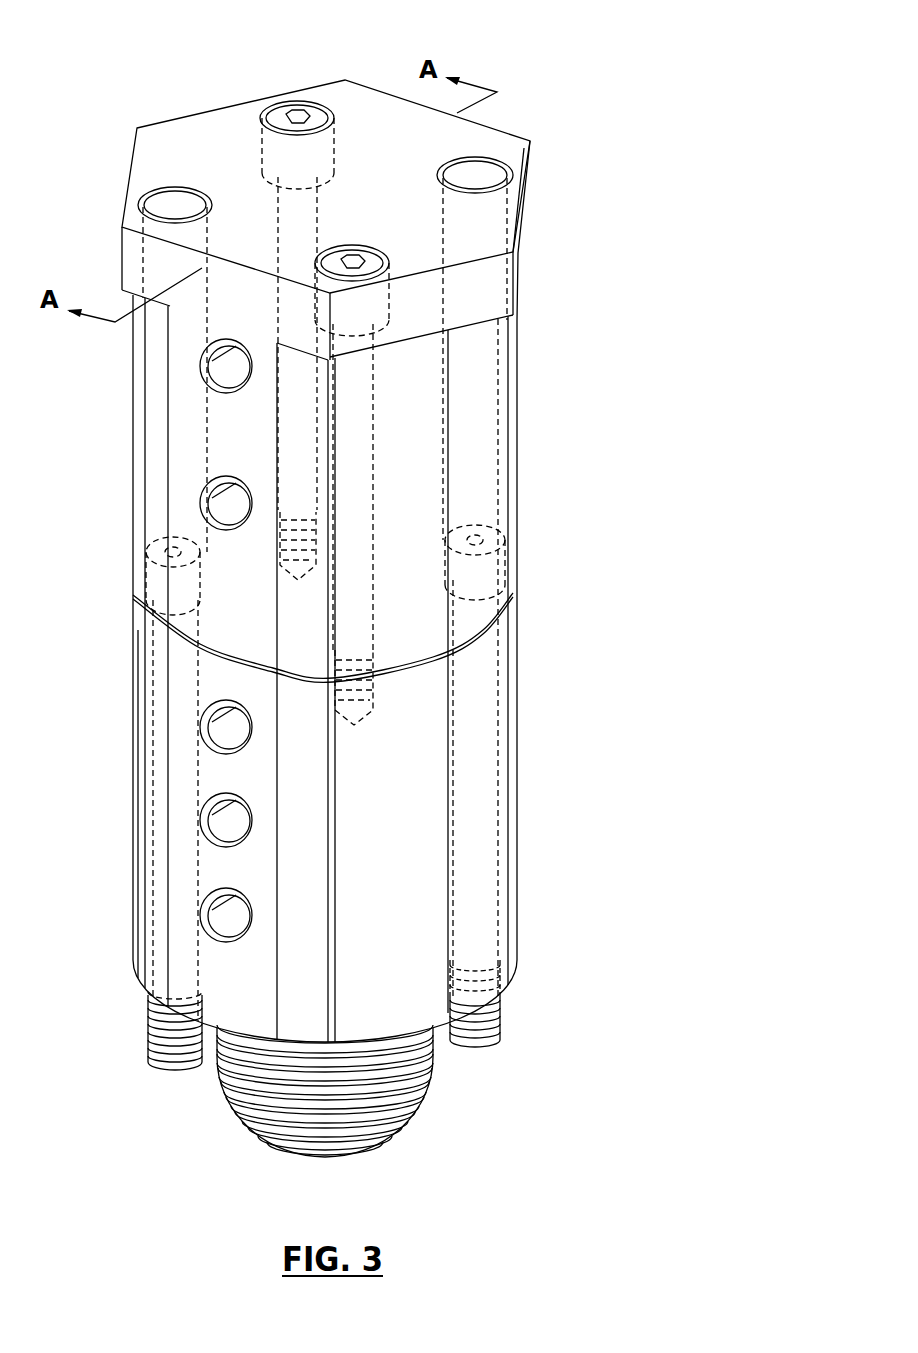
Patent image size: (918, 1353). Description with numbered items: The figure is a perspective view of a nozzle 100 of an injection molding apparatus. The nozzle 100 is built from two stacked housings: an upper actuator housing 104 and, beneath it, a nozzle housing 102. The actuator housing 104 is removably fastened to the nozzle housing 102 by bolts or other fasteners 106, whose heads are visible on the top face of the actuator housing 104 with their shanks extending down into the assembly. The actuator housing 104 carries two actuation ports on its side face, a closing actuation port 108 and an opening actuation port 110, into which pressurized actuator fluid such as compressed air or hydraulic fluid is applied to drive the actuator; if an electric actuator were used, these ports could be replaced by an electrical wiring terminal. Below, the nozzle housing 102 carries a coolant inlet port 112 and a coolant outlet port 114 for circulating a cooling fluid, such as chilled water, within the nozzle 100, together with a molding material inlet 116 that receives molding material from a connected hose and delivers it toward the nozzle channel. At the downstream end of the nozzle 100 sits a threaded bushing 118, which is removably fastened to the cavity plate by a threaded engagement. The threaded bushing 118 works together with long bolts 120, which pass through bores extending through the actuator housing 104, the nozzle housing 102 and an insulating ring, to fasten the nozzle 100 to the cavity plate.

The nozzle 100 is at (672, 107).
The nozzle housing 102 is at (515, 800).
The actuator housing 104 is at (515, 452).
The fasteners 106 is at (292, 120).
The closing actuation port 108 is at (200, 368).
The opening actuation port 110 is at (200, 504).
The coolant inlet port 112 is at (200, 820).
The coolant outlet port 114 is at (200, 915).
The molding material inlet 116 is at (200, 729).
The threaded bushing 118 is at (413, 1110).
The bolts 120 is at (146, 576).